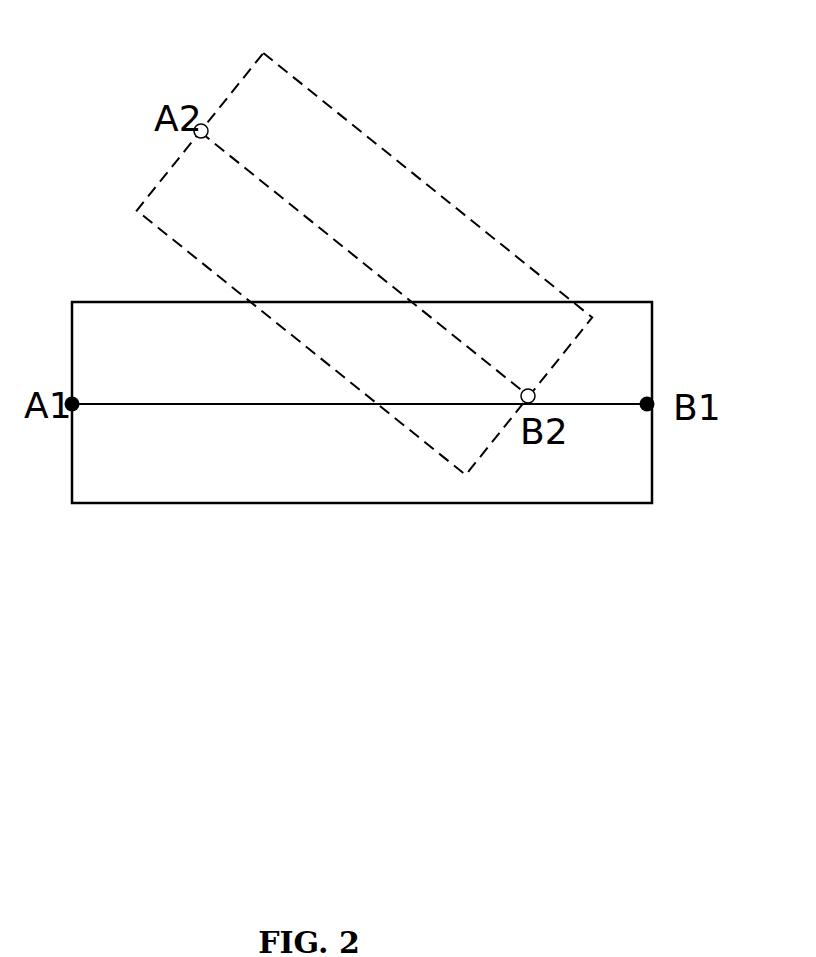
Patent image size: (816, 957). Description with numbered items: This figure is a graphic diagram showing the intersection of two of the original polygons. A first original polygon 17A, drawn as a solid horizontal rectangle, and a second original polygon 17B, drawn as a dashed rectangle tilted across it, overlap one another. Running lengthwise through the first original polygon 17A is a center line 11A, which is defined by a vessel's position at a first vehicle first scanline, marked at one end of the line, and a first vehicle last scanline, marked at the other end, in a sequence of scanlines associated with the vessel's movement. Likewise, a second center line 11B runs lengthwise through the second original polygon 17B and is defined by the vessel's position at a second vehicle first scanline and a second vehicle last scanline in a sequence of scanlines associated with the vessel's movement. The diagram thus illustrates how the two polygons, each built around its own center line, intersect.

The center line 11A is at (198, 413).
The second center line 11B is at (342, 223).
The first original polygon 17A is at (153, 286).
The second original polygon 17B is at (271, 50).